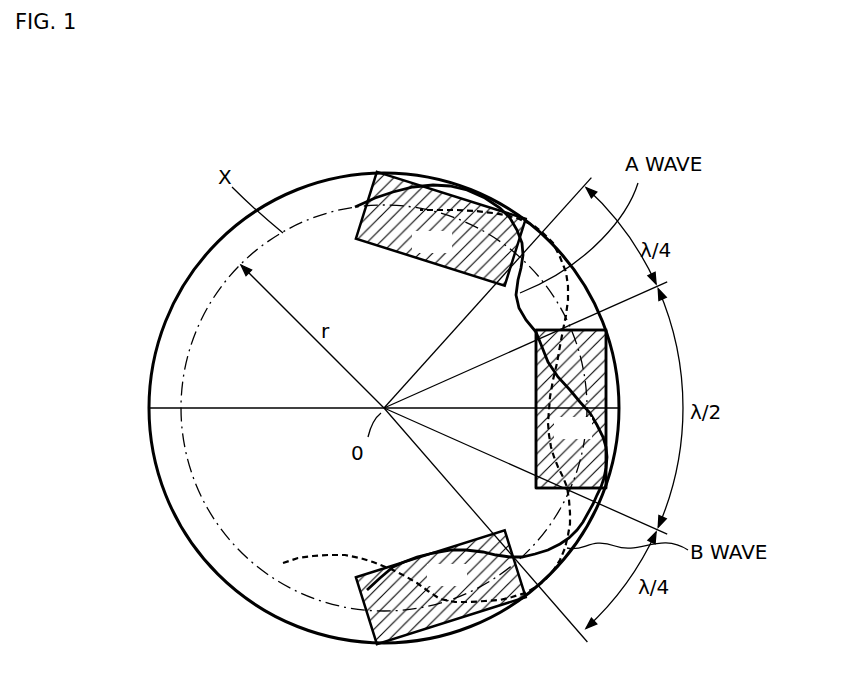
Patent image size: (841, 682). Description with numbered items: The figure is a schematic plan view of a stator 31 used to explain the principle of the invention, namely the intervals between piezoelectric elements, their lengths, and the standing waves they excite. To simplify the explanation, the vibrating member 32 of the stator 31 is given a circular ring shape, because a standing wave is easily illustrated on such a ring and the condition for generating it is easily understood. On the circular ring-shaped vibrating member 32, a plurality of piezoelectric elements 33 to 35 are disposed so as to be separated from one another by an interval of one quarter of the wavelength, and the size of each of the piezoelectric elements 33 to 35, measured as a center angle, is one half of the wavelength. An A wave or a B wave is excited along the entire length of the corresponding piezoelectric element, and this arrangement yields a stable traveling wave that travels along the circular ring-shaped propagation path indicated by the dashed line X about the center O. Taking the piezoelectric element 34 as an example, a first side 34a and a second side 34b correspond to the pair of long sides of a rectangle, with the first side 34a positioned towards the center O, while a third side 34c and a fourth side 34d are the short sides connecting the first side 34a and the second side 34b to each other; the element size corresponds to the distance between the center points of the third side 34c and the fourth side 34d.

The stator 31 is at (213, 131).
The vibrating member 32 is at (298, 632).
The piezoelectric element 33 is at (350, 207).
The piezoelectric element 34 is at (610, 362).
The first side 34a is at (536, 430).
The second side 34b is at (607, 412).
The third side 34c is at (565, 330).
The fourth side 34d is at (595, 487).
The piezoelectric element 35 is at (468, 617).